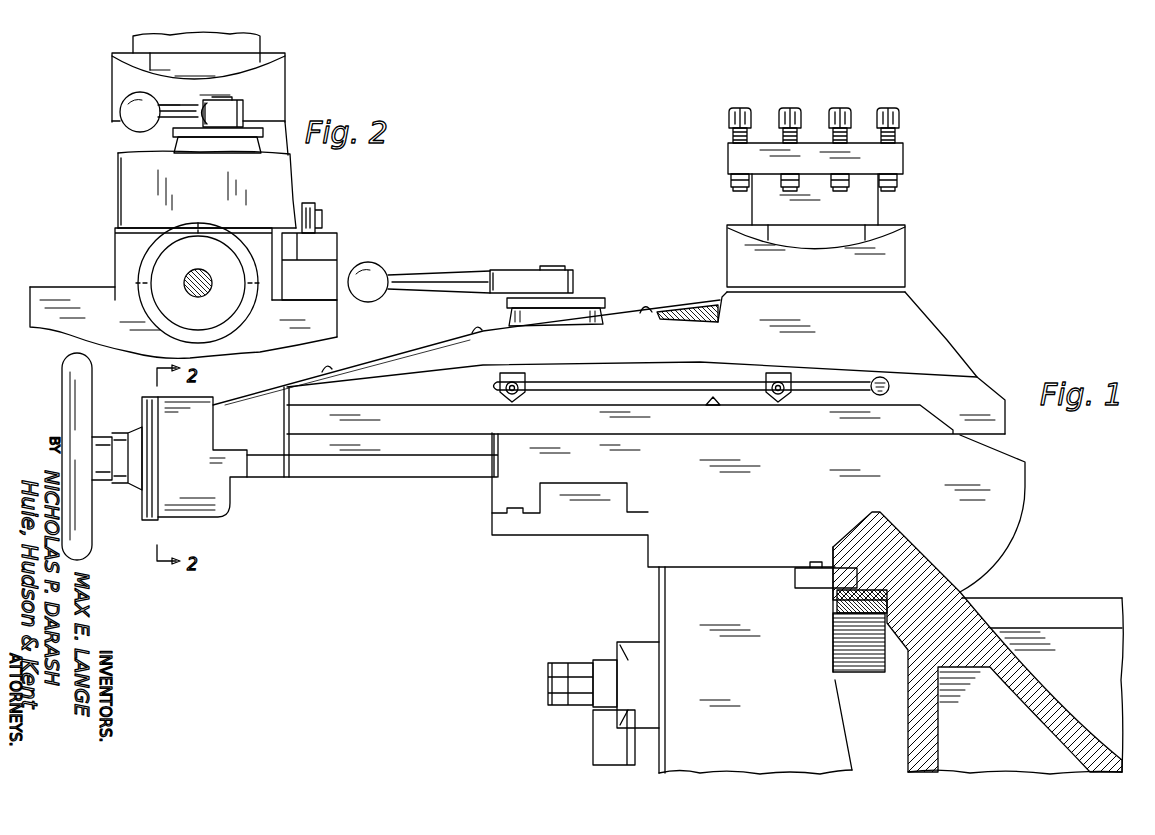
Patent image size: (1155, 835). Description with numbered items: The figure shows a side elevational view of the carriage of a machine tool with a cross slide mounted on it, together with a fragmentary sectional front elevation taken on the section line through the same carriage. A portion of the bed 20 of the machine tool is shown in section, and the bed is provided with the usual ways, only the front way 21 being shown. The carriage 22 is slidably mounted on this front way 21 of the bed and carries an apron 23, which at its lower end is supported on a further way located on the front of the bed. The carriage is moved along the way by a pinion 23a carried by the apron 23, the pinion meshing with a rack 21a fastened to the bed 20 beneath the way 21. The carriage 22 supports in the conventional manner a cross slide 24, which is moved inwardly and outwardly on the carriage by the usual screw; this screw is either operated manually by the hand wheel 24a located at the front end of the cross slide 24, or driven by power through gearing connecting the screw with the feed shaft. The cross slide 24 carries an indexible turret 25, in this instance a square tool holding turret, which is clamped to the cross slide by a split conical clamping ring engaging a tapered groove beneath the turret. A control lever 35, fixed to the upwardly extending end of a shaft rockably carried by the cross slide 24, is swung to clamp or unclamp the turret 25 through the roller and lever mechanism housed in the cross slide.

In FIG. 1, the bed 20 is at (1065, 598).
In FIG. 1, the way 21 is at (880, 536).
In FIG. 1, the rack 21a is at (838, 601).
In FIG. 2, the carriage 22 is at (76, 296).
In FIG. 1, the carriage 22 is at (1010, 490).
In FIG. 1, the apron 23 is at (667, 600).
In FIG. 1, the pinion 23a is at (866, 673).
In FIG. 2, the cross slide 24 is at (125, 177).
In FIG. 1, the cross slide 24 is at (425, 356).
In FIG. 1, the hand wheel 24a is at (92, 522).
In FIG. 2, the indexible turret 25 is at (283, 76).
In FIG. 1, the indexible turret 25 is at (870, 205).
In FIG. 2, the control lever 35 is at (135, 110).
In FIG. 1, the control lever 35 is at (444, 286).